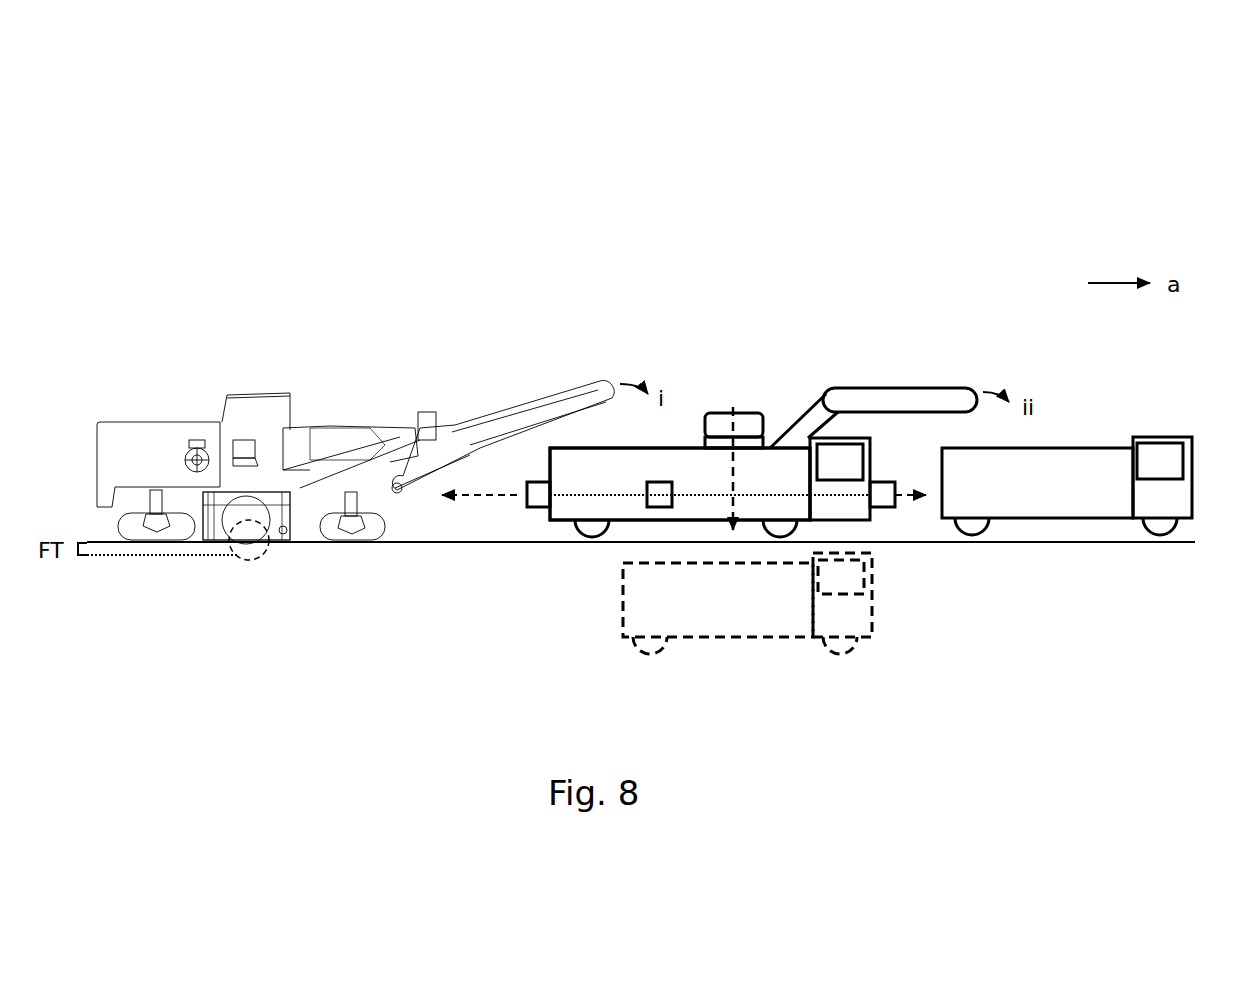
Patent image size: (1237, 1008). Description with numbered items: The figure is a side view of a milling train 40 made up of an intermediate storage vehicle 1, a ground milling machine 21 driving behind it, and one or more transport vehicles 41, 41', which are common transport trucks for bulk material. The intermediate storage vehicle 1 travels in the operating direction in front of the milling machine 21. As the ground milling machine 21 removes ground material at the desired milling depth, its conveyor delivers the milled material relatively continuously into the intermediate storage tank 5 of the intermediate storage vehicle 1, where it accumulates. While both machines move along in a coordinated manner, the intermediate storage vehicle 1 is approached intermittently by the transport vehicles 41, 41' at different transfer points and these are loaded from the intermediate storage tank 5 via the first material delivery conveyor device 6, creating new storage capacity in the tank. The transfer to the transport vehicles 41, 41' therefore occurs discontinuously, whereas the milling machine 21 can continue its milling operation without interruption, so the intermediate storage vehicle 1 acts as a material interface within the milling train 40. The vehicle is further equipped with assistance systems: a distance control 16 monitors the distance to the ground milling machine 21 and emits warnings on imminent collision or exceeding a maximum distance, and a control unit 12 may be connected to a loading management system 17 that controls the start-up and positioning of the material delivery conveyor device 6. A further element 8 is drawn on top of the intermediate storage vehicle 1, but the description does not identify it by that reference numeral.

The milling train 40 is at (675, 237).
The ground milling machine 21 is at (193, 380).
The intermediate storage vehicle 1 is at (735, 333).
The intermediate storage tank 5 is at (588, 508).
The first material delivery conveyor device 6 is at (921, 398).
The sensor / control unit 8 is at (752, 425).
The control unit 12 is at (660, 492).
The distance control 16 is at (542, 508).
The loading management system 17 is at (885, 497).
The transport vehicle 41 is at (1067, 436).
The transport vehicle 41' is at (797, 626).